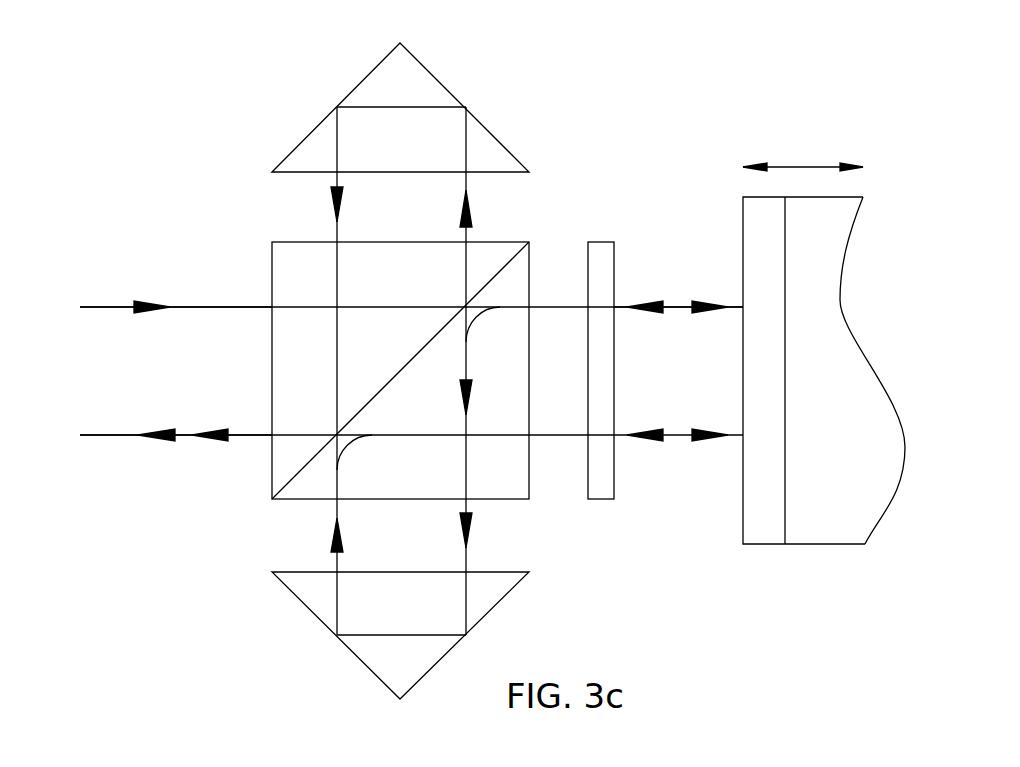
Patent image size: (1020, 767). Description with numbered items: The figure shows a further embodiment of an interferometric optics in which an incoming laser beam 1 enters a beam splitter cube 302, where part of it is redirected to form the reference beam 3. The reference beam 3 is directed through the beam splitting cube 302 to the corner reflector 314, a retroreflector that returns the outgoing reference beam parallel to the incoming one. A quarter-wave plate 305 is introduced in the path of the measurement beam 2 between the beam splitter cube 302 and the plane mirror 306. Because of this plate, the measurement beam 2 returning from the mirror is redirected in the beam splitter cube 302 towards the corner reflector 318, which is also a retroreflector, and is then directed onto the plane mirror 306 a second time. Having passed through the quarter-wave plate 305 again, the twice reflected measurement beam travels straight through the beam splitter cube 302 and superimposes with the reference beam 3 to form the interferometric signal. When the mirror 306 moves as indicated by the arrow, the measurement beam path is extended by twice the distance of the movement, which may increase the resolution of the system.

The incoming laser beam 1 is at (208, 307).
The measurement beam 2 is at (684, 305).
The reference beam 3 is at (467, 138).
The beam splitter cube 302 is at (270, 242).
The quarter-wave plate 305 is at (598, 489).
The plane mirror 306 is at (770, 531).
The corner reflector 314 is at (390, 77).
The corner reflector 318 is at (390, 667).